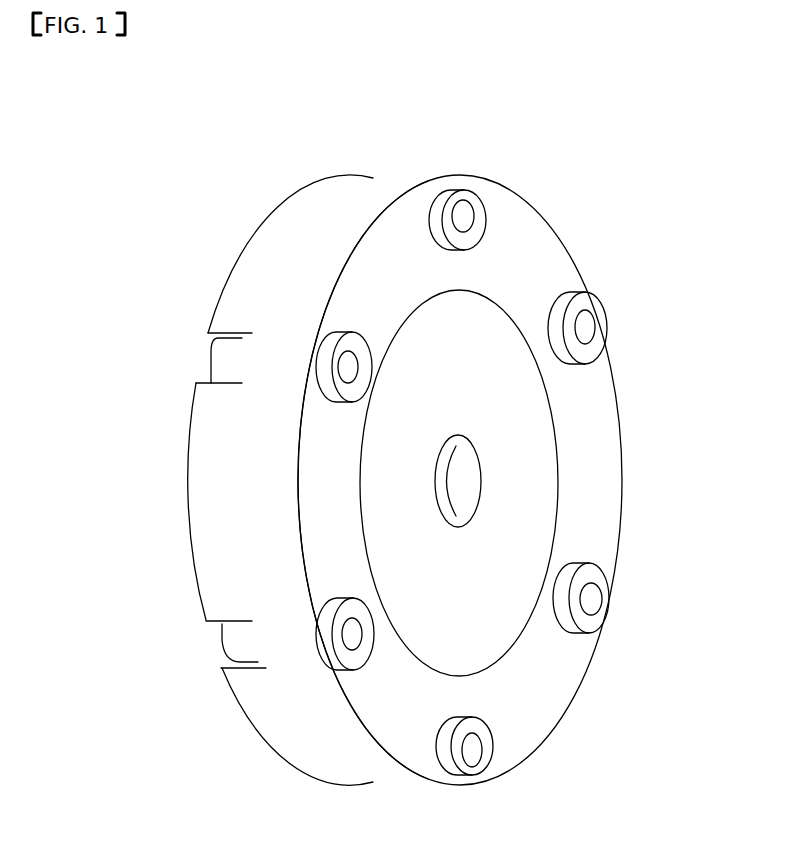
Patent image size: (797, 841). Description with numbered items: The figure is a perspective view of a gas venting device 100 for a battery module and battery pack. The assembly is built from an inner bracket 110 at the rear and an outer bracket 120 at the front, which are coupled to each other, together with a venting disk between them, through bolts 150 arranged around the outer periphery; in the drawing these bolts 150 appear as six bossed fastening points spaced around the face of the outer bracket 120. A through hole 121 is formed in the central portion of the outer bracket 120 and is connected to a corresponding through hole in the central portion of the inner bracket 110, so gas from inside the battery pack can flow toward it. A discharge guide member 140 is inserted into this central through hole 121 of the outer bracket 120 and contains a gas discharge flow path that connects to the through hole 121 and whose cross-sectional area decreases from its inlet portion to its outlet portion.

The gas venting device 100 is at (172, 118).
The inner bracket 110 is at (225, 287).
The outer bracket 120 is at (618, 540).
The through hole 121 is at (468, 481).
The discharge guide member 140 is at (498, 610).
The bolt 150 is at (583, 330).